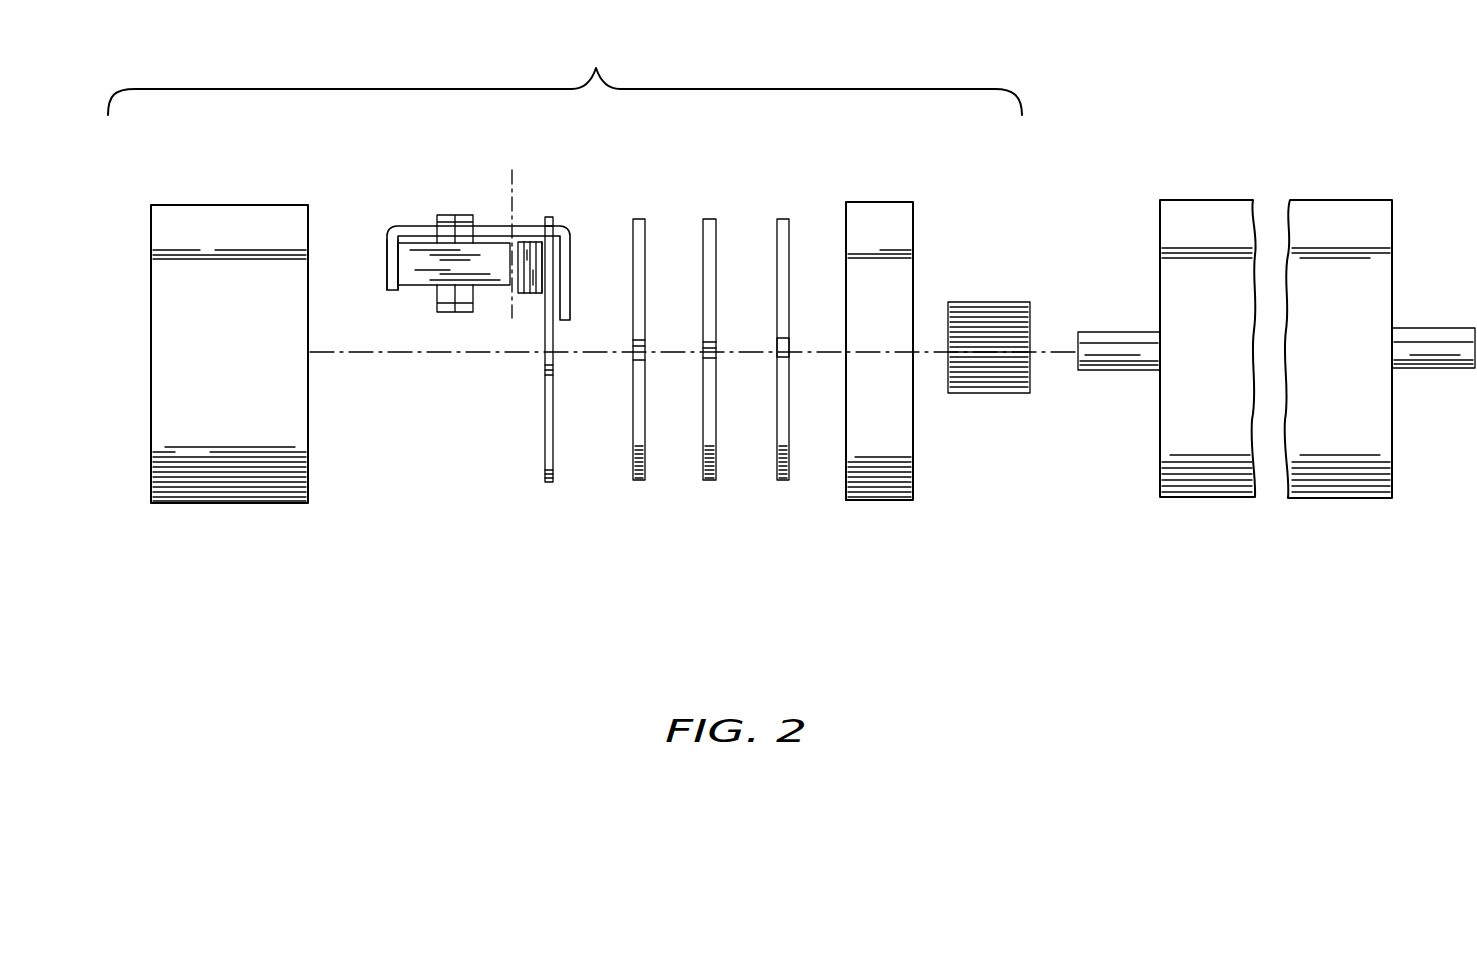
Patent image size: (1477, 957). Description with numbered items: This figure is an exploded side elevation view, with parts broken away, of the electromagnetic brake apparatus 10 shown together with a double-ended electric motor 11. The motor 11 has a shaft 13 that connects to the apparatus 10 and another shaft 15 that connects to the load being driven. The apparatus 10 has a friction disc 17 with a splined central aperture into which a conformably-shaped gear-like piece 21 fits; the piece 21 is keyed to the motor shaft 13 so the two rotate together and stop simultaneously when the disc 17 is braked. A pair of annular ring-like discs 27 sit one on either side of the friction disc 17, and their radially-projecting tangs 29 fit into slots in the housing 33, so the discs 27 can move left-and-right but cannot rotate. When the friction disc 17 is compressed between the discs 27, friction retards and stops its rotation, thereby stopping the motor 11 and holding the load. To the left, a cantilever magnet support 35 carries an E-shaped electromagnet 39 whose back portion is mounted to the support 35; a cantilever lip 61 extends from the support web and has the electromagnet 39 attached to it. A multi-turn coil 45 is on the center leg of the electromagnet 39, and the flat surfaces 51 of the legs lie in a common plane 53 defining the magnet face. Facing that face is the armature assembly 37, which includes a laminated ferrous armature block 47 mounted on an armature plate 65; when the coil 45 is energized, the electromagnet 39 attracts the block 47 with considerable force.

The electromagnetic brake apparatus 10 is at (596, 68).
The electric motor 11 is at (1188, 498).
The shaft 13 is at (1118, 371).
The shaft 15 is at (1422, 368).
The friction disc 17 is at (708, 218).
The gear-like piece 21 is at (990, 393).
The annular ring-like discs 27 is at (637, 218).
The tangs 29 is at (775, 352).
The housing 33 is at (913, 206).
The magnet support 35 is at (417, 224).
The armature assembly 37 is at (519, 378).
The electromagnet 39 is at (420, 282).
The coil 45 is at (454, 214).
The armature block 47 is at (544, 294).
The surfaces 51 is at (506, 272).
The plane 53 is at (517, 175).
The cantilever lip 61 is at (387, 260).
The armature plate 65 is at (543, 469).